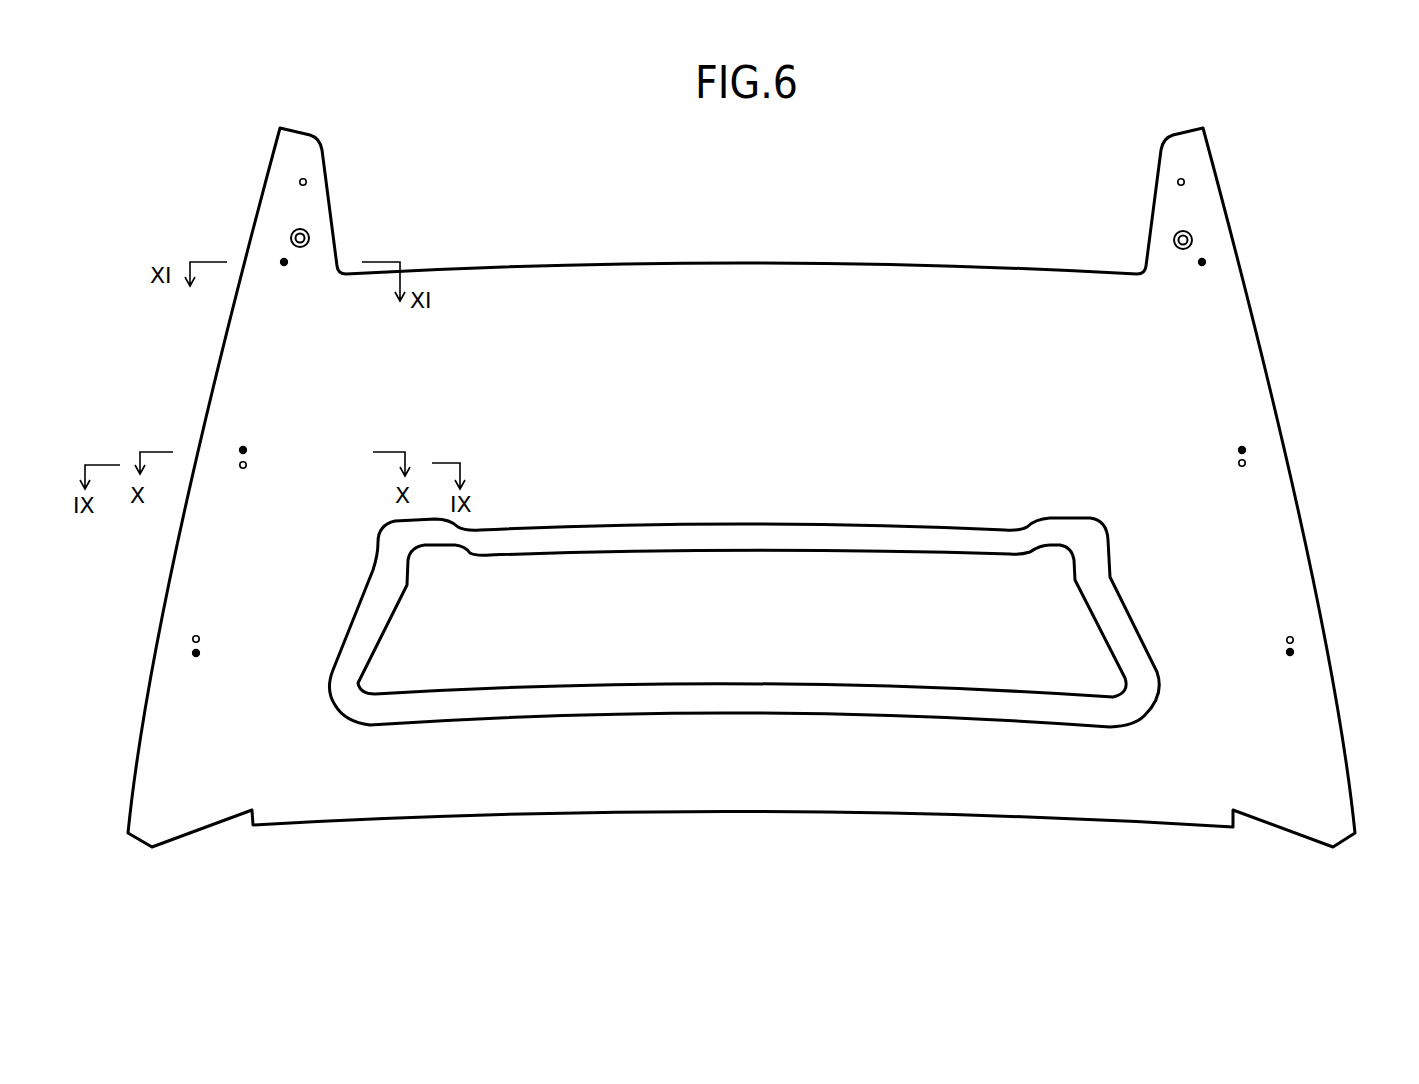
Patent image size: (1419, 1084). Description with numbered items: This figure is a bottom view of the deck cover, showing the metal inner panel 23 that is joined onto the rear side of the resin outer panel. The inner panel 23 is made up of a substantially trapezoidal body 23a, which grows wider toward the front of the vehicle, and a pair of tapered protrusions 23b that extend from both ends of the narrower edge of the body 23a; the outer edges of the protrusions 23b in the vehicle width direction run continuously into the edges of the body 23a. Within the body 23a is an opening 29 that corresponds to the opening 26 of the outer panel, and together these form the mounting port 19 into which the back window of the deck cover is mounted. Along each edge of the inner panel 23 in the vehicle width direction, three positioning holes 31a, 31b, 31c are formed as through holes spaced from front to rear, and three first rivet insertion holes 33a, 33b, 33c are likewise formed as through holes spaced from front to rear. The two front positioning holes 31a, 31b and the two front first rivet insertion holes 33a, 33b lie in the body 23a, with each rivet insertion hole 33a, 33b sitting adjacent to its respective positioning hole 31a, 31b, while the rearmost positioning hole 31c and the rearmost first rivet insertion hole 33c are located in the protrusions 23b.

The mounting port 19 is at (852, 683).
The inner panel 23 is at (520, 815).
The body 23a is at (372, 740).
The protrusions 23b is at (312, 230).
The opening 26 is at (618, 683).
The opening 29 is at (743, 712).
The positioning hole 31a is at (192, 640).
The positioning hole 31b is at (242, 468).
The positioning hole 31c is at (297, 184).
The first rivet insertion hole 33a is at (194, 656).
The first rivet insertion hole 33b is at (241, 448).
The first rivet insertion hole 33c is at (282, 266).